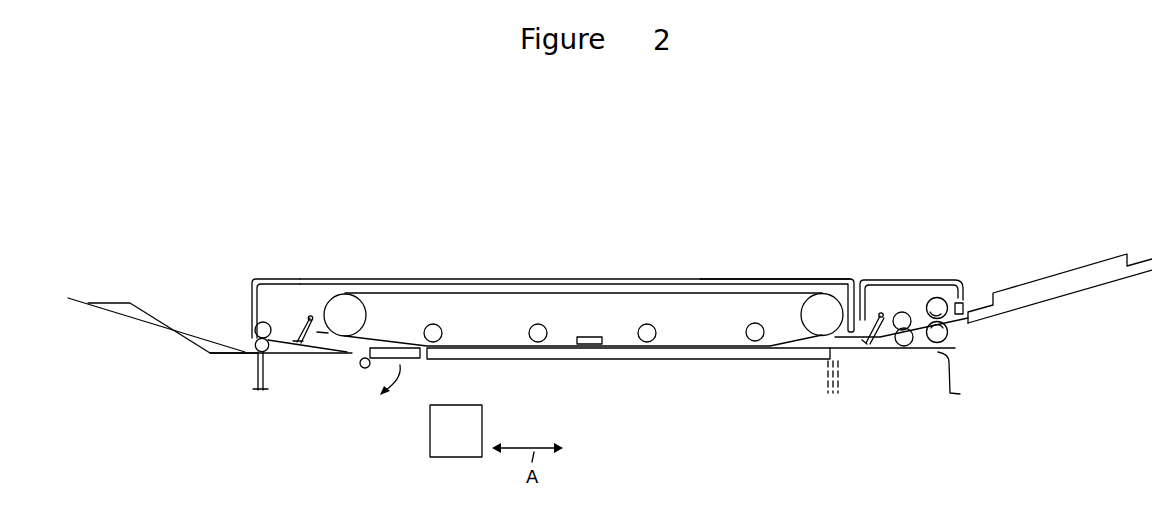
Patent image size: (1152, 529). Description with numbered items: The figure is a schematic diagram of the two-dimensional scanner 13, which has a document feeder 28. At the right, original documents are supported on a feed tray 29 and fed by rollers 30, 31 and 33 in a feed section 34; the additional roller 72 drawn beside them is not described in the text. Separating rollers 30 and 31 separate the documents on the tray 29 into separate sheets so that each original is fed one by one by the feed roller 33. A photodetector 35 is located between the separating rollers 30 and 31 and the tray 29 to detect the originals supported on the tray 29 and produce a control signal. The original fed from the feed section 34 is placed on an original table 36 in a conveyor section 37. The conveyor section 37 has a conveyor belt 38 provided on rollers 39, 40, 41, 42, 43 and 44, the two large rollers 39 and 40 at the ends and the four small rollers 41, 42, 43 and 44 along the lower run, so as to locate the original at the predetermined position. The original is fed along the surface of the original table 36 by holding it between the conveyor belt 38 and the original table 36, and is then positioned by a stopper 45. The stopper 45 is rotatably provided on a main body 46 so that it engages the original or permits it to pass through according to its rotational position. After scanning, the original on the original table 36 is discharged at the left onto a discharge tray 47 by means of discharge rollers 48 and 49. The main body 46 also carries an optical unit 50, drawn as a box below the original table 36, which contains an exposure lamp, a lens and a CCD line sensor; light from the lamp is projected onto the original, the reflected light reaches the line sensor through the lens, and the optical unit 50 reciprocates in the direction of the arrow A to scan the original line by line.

The two-dimensional scanner 13 is at (598, 244).
The document feeder 28 is at (500, 276).
The feed tray 29 is at (1082, 296).
The separating roller 30 is at (941, 302).
The separating roller 31 is at (936, 344).
The feed roller 33 is at (903, 347).
The feed section 34 is at (917, 276).
The photodetector 35 is at (964, 307).
The original table 36 is at (692, 353).
The conveyor section 37 is at (727, 279).
The conveyor belt 38 is at (657, 293).
The roller 39 is at (348, 308).
The roller 40 is at (820, 308).
The roller 41 is at (443, 331).
The roller 42 is at (547, 332).
The roller 43 is at (656, 333).
The roller 44 is at (764, 331).
The stopper 45 is at (387, 355).
The main body 46 is at (257, 372).
The discharge tray 47 is at (160, 340).
The discharge roller 48 is at (265, 321).
The discharge roller 49 is at (270, 350).
The optical unit 50 is at (477, 418).
The transport roller 72 is at (900, 314).